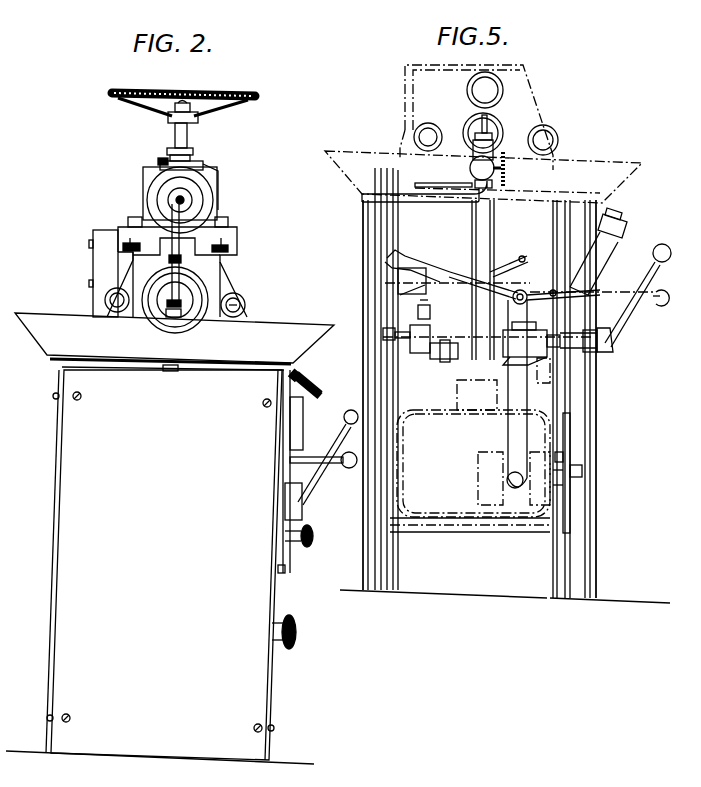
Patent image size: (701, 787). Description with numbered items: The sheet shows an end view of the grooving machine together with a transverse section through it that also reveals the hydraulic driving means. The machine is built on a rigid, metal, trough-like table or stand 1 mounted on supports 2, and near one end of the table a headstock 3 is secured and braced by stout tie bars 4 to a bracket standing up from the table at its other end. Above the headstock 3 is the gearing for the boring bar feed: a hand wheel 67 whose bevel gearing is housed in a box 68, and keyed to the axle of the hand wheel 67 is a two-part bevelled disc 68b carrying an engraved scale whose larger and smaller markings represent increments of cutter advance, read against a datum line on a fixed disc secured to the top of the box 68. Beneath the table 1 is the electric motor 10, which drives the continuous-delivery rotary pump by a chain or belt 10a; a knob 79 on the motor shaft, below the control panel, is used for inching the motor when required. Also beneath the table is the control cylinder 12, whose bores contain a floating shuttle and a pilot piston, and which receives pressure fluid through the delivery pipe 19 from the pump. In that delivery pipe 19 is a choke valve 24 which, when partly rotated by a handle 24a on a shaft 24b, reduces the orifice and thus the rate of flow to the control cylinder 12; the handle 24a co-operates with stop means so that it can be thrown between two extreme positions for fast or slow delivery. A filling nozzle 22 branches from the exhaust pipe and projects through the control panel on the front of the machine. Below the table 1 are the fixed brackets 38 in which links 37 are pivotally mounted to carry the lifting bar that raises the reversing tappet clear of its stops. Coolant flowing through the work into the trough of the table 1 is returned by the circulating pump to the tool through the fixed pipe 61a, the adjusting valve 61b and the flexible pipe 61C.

In FIG. 2, the table or stand 1 is at (174, 342).
In FIG. 2, the supports 2 is at (160, 567).
In FIG. 5, the supports 2 is at (362, 553).
In FIG. 2, the headstock 3 is at (208, 277).
In FIG. 2, the tie bars 4 is at (243, 305).
In FIG. 5, the electric motor 10 is at (455, 430).
In FIG. 5, the chain or belt 10a is at (570, 432).
In FIG. 5, the control cylinder 12 is at (425, 322).
In FIG. 5, the delivery pipe 19 is at (520, 400).
In FIG. 2, the filling nozzle 22 is at (316, 396).
In FIG. 5, the filling nozzle 22 is at (598, 251).
In FIG. 5, the choke valve 24 is at (507, 352).
In FIG. 2, the handle 24a is at (321, 478).
In FIG. 5, the handle 24a is at (641, 298).
In FIG. 5, the shaft 24b is at (592, 353).
In FIG. 5, the links 37 is at (515, 254).
In FIG. 5, the fixed brackets 38 is at (530, 213).
In FIG. 5, the fixed pipe 61a is at (364, 201).
In FIG. 5, the adjusting valve 61b is at (506, 172).
In FIG. 2, the flexible pipe 61C is at (172, 260).
In FIG. 2, the hand wheel 67 is at (116, 98).
In FIG. 2, the box 68 is at (201, 172).
In FIG. 2, the two-part bevelled disc 68b is at (163, 160).
In FIG. 2, the knob 79 is at (295, 623).